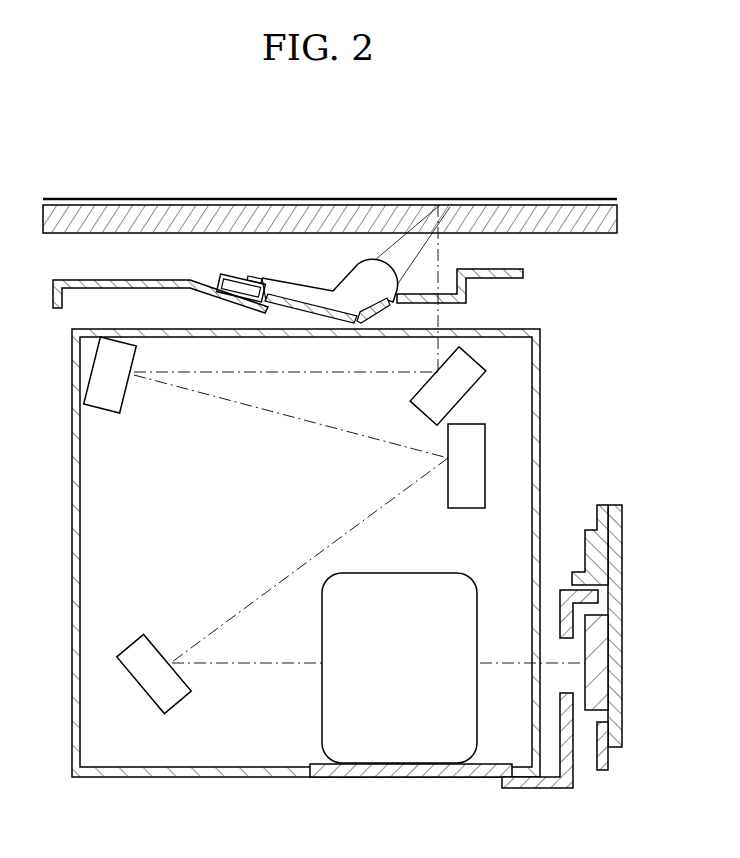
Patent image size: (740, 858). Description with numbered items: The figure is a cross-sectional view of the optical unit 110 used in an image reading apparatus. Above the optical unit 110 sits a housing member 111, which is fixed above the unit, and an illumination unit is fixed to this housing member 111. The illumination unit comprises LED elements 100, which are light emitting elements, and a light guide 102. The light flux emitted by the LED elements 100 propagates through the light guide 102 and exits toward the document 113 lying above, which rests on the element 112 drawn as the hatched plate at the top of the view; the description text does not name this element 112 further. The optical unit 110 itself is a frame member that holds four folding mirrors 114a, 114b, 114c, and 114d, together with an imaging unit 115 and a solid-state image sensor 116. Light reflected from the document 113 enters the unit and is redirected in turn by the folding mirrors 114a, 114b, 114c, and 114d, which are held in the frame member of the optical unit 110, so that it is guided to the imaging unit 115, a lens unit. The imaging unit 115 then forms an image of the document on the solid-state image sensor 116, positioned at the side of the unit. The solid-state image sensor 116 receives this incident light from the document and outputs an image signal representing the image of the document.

The LED elements 100 is at (255, 277).
The light guide 102 is at (348, 285).
The optical unit 110 is at (122, 778).
The housing member 111 is at (497, 268).
The platen glass 112 is at (165, 212).
The document 113 is at (470, 200).
The folding mirror 114a is at (420, 405).
The folding mirror 114b is at (120, 402).
The folding mirror 114c is at (468, 504).
The folding mirror 114d is at (175, 697).
The imaging unit 115 is at (399, 753).
The solid-state image sensor 116 is at (608, 667).